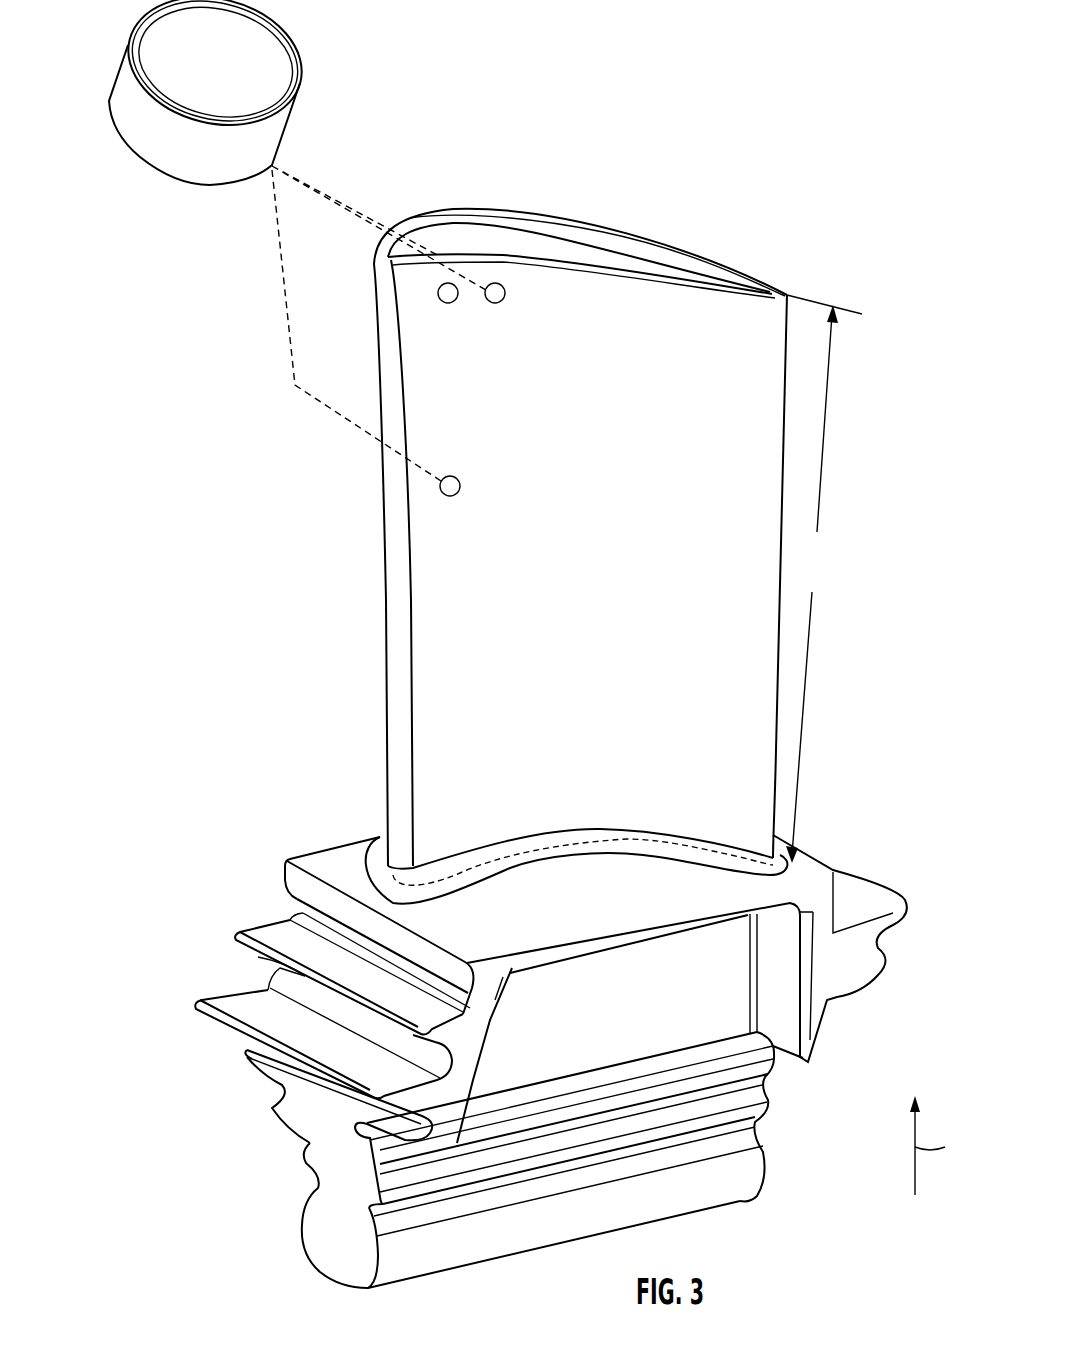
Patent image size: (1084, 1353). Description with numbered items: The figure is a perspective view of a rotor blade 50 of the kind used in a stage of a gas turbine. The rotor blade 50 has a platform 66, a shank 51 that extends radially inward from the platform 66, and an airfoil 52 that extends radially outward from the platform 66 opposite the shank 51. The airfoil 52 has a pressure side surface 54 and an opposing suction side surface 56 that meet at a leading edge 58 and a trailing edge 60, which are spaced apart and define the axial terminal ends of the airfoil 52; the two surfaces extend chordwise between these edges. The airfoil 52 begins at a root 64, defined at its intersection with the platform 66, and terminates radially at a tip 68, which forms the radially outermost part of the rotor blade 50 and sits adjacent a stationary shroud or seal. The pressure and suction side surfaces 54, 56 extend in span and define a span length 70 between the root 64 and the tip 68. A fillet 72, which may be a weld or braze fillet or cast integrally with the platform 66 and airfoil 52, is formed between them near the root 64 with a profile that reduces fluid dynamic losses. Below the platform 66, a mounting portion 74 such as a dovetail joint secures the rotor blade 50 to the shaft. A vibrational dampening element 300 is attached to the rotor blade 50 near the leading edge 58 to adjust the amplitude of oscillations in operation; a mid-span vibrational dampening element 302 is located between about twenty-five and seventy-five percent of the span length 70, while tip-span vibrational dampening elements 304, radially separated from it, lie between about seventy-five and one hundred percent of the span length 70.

The rotor blade 50 is at (735, 182).
The shank 51 is at (258, 957).
The airfoil 52 is at (586, 502).
The pressure side surface 54 is at (436, 565).
The suction side surface 56 is at (412, 291).
The leading edge 58 is at (384, 470).
The trailing edge 60 is at (787, 452).
The root 64 is at (573, 842).
The platform 66 is at (512, 943).
The tip 68 is at (557, 217).
The span length 70 is at (812, 584).
The fillet 72 is at (492, 845).
The mounting portion 74 is at (743, 1143).
The vibrational dampening element 300 is at (118, 62).
The mid-span vibrational dampening element 302 is at (452, 477).
The tip-span vibrational dampening element 304 is at (456, 303).